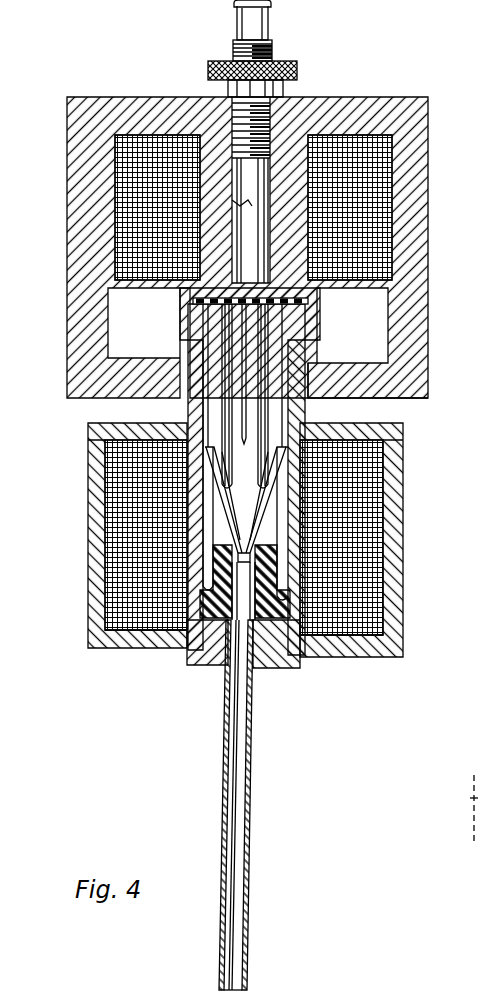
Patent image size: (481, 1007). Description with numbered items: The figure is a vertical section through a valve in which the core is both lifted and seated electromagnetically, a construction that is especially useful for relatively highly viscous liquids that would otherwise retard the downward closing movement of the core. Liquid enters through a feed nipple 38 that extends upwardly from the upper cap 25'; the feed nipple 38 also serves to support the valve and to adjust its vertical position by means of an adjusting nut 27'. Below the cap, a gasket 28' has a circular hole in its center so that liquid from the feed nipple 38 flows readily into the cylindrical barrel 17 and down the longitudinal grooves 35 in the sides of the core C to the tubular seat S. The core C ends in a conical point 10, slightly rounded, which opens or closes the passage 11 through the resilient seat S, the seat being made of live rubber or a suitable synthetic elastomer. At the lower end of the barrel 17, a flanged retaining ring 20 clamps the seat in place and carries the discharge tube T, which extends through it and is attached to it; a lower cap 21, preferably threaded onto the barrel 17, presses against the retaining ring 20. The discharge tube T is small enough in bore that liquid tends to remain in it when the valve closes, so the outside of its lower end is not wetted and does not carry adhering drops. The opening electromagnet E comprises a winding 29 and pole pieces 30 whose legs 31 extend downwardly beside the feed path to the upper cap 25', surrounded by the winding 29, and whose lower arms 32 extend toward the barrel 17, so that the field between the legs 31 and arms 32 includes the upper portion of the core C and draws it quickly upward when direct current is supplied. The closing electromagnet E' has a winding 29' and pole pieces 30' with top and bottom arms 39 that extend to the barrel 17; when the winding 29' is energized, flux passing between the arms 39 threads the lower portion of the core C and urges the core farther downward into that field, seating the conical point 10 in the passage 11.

The feed nipple 38 is at (262, 22).
The adjusting nut 27' is at (281, 70).
The electromagnet E is at (243, 261).
The pole pieces 30 is at (243, 247).
The winding 29 is at (289, 207).
The lower arms 32 is at (372, 396).
The legs 31 is at (182, 288).
The gasket 28' is at (233, 314).
The upper cap 25' is at (281, 313).
The cylindrical barrel 17 is at (291, 418).
The grooves 35 is at (212, 398).
The core C is at (253, 402).
The conical point 10 is at (250, 522).
The tubular seat S is at (258, 556).
The passage 11 is at (245, 582).
The electromagnet E' is at (241, 554).
The pole pieces 30' is at (238, 540).
The winding 29' is at (278, 537).
The top and bottom arms 39 is at (128, 428).
The lower cap 21 is at (211, 664).
The retaining ring 20 is at (298, 668).
The discharge tube T is at (251, 780).